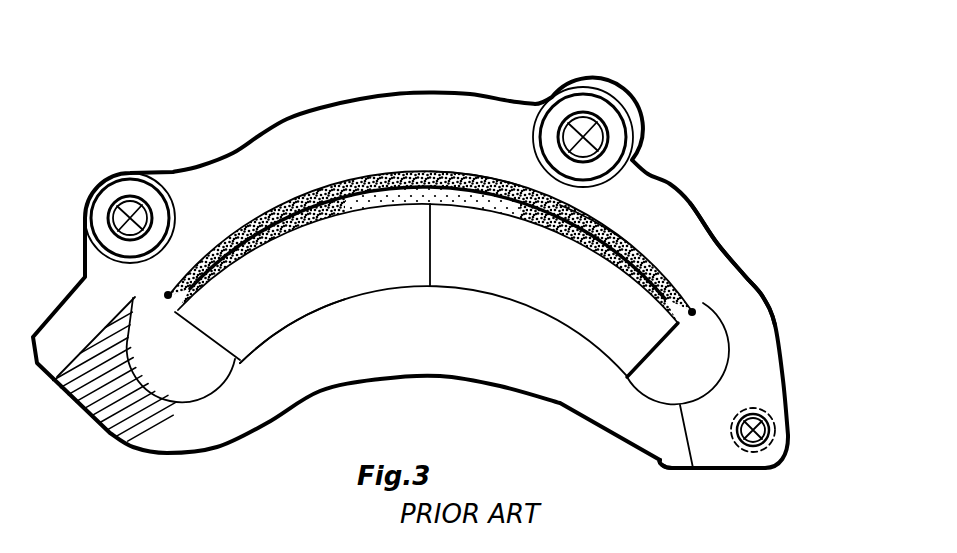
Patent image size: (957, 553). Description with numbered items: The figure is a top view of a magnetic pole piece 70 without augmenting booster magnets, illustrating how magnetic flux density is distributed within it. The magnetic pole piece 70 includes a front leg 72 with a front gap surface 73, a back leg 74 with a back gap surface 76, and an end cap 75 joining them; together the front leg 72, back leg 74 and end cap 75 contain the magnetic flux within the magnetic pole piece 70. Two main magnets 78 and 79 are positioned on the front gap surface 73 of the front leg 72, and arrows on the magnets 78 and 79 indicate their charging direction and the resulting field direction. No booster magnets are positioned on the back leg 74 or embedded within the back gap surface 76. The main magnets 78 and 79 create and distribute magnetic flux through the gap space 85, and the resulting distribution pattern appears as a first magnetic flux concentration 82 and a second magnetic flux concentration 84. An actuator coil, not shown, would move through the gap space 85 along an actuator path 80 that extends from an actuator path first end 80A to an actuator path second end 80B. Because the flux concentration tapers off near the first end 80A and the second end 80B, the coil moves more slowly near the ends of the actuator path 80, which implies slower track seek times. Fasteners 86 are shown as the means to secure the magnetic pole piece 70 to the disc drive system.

The magnetic pole piece 70 is at (533, 64).
The front leg 72 is at (670, 460).
The front gap surface 73 is at (635, 390).
The back leg 74 is at (717, 243).
The end cap 75 is at (88, 397).
The back gap surface 76 is at (490, 176).
The main magnet 78 is at (377, 272).
The main magnet 79 is at (556, 252).
The actuator path 80 is at (434, 168).
The actuator path first end 80A is at (150, 284).
The actuator path second end 80B is at (710, 304).
The first magnetic flux concentration 82 is at (327, 296).
The second magnetic flux concentration 84 is at (593, 213).
The gap space 85 is at (707, 333).
The fasteners 86 is at (133, 174).